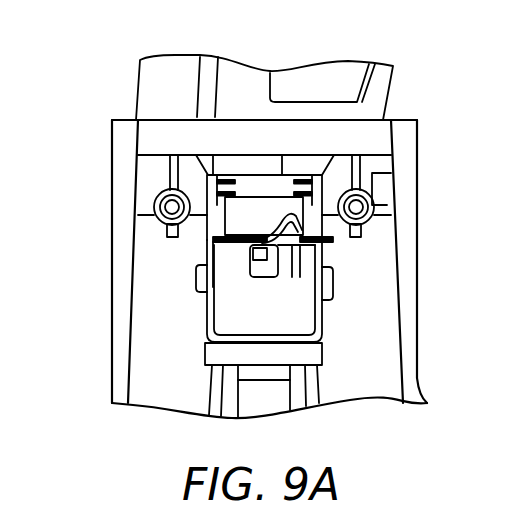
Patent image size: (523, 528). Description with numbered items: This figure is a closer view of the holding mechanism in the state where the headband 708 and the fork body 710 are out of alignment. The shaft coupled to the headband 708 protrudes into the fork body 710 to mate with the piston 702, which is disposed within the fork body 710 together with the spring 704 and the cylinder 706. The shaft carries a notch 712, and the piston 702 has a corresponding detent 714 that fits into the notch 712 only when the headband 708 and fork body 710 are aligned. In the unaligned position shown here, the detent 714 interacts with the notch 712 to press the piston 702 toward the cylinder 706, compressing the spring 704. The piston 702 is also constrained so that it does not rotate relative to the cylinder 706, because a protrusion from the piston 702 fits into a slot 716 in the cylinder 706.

The piston 702 is at (258, 263).
The spring 704 is at (270, 279).
The cylinder 706 is at (296, 312).
The headband 708 is at (138, 73).
The fork body 710 is at (140, 413).
The notch 712 is at (300, 229).
The detent 714 is at (287, 236).
The slot 716 is at (250, 276).